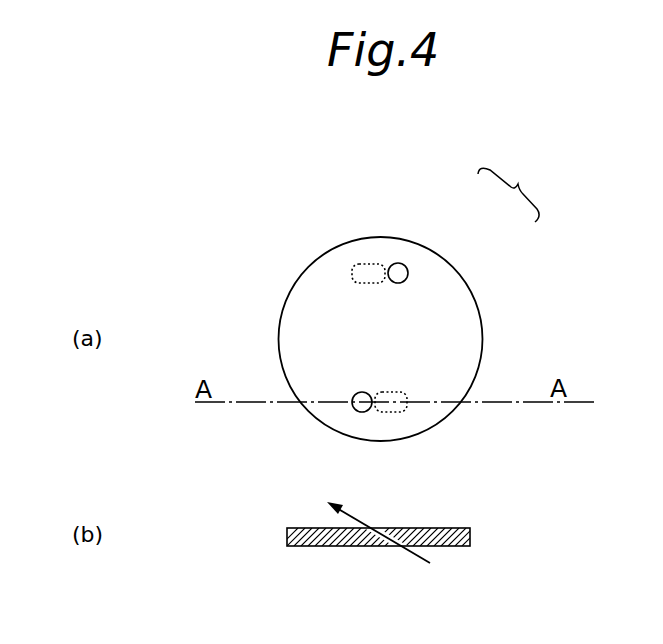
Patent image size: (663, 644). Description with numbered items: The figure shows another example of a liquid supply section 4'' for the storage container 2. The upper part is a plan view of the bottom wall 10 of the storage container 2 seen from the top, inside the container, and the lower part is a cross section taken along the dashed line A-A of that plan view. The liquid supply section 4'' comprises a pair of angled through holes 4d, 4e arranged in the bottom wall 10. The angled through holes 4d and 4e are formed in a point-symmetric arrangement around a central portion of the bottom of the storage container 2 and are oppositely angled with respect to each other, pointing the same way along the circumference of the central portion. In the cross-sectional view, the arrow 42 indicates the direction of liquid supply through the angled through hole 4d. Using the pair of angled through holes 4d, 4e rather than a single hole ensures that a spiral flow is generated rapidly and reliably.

The bottom wall 10 is at (303, 327).
The angled through hole 4e is at (397, 276).
The angled through hole 4d is at (364, 399).
The liquid supply section 4'' is at (516, 187).
The storage container 2 is at (503, 300).
The arrow 42 is at (410, 553).